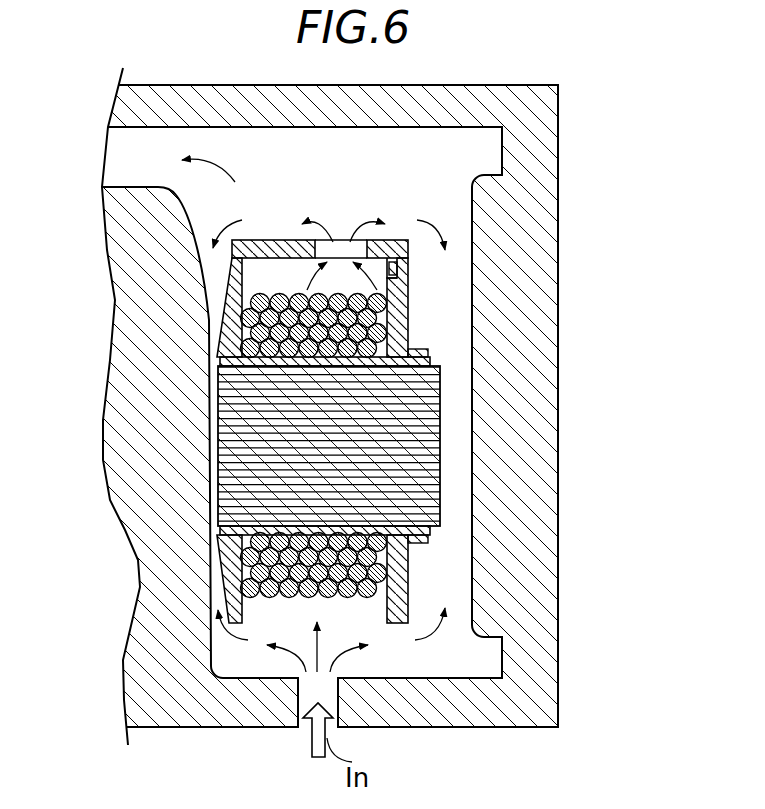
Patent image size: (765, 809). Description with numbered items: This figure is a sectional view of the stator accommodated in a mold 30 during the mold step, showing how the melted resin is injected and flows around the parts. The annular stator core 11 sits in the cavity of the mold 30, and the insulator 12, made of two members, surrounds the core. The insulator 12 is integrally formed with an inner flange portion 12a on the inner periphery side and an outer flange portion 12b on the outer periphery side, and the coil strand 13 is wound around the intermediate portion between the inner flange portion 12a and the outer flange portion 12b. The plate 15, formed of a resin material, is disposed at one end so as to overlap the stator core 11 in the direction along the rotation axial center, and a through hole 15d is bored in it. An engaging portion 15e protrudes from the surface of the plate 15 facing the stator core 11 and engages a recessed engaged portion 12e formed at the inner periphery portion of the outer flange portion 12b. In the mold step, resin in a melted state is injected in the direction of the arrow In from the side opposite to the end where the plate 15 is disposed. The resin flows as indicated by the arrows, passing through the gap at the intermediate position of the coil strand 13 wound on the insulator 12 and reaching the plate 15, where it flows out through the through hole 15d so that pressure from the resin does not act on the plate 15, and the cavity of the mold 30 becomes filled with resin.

The mold 30 is at (556, 133).
The stator core 11 is at (440, 422).
The insulator 12 is at (222, 325).
The inner flange portion 12a is at (228, 290).
The outer flange portion 12b is at (405, 330).
The engaged portion 12e is at (390, 262).
The coil strand 13 is at (385, 560).
The plate 15 is at (277, 240).
The through hole 15d is at (342, 250).
The engaging portion 15e is at (398, 280).